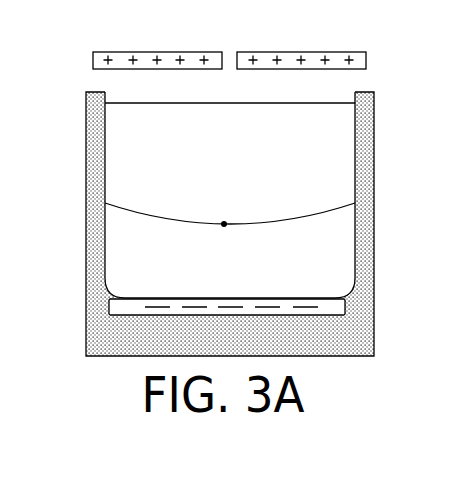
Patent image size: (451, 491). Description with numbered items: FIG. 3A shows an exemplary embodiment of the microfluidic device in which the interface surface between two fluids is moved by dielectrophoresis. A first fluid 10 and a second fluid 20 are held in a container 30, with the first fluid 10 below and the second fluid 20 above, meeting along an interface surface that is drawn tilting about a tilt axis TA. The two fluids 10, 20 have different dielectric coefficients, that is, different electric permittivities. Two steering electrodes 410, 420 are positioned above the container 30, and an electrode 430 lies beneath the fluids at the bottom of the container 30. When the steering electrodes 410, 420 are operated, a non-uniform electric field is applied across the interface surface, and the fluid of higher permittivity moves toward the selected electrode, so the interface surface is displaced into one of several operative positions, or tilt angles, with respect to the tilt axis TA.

The first fluid 10 is at (230, 244).
The second fluid 20 is at (230, 136).
The container 30 is at (353, 324).
The tilt axis TA is at (224, 214).
The steering electrode 410 is at (157, 41).
The steering electrode 420 is at (301, 41).
The bottom electrode 430 is at (227, 320).